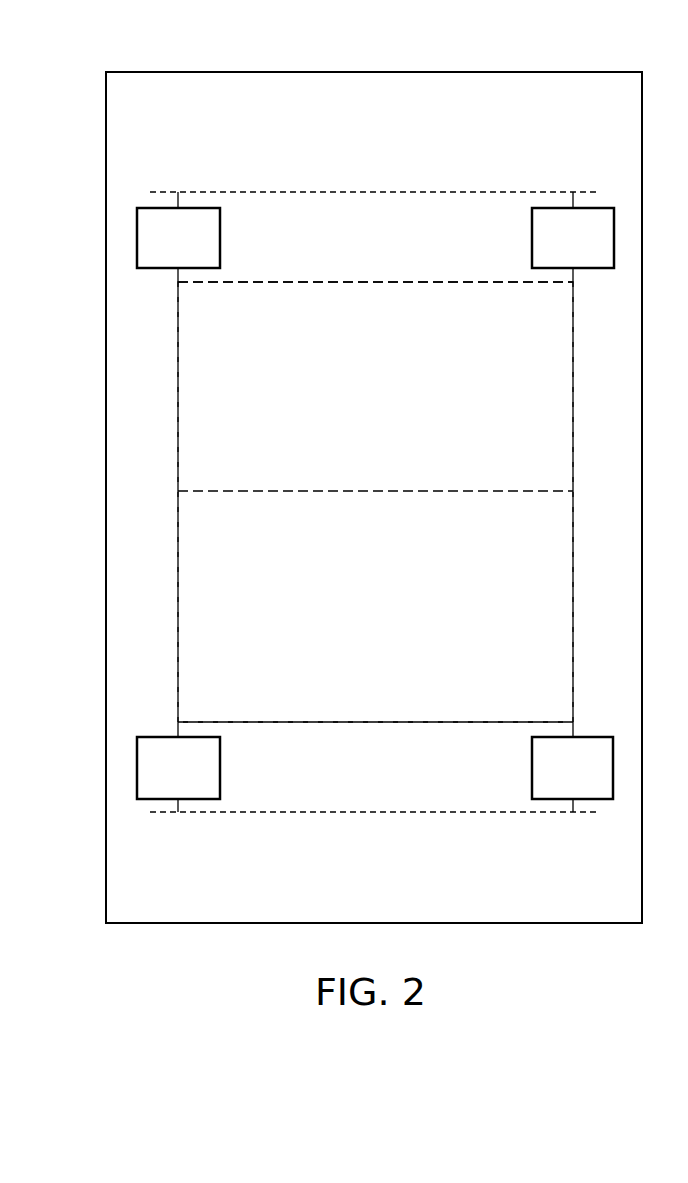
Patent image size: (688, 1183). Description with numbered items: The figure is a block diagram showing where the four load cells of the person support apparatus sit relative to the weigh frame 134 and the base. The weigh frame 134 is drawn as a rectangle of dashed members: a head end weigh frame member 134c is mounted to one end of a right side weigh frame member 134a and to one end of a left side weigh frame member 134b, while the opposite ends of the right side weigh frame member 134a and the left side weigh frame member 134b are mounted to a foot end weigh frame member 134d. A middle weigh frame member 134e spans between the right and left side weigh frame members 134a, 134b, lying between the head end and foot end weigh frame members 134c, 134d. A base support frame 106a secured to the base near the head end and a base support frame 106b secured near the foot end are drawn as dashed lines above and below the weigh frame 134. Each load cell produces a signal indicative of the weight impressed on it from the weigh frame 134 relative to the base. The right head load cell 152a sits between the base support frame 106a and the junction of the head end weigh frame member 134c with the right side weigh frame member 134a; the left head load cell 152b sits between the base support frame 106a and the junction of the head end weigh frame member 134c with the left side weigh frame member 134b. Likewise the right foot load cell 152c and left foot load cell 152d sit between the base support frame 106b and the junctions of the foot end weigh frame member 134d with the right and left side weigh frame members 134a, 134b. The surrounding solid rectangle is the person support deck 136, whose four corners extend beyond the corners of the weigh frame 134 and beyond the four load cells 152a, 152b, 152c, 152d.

The person support deck 136 is at (573, 72).
The base support frame 106a is at (372, 192).
The base support frame 106b is at (372, 812).
The weigh frame 134 is at (126, 422).
The right side weigh frame member 134a is at (178, 388).
The left side weigh frame member 134b is at (573, 600).
The head end weigh frame member 134c is at (372, 282).
The foot end weigh frame member 134d is at (372, 722).
The middle weigh frame member 134e is at (372, 491).
The right head load cell (RHLC) 152a is at (220, 240).
The left head load cell (LHLC) 152b is at (532, 240).
The right foot load cell (RFLC) 152c is at (220, 768).
The left foot load cell (LFLC) 152d is at (532, 770).